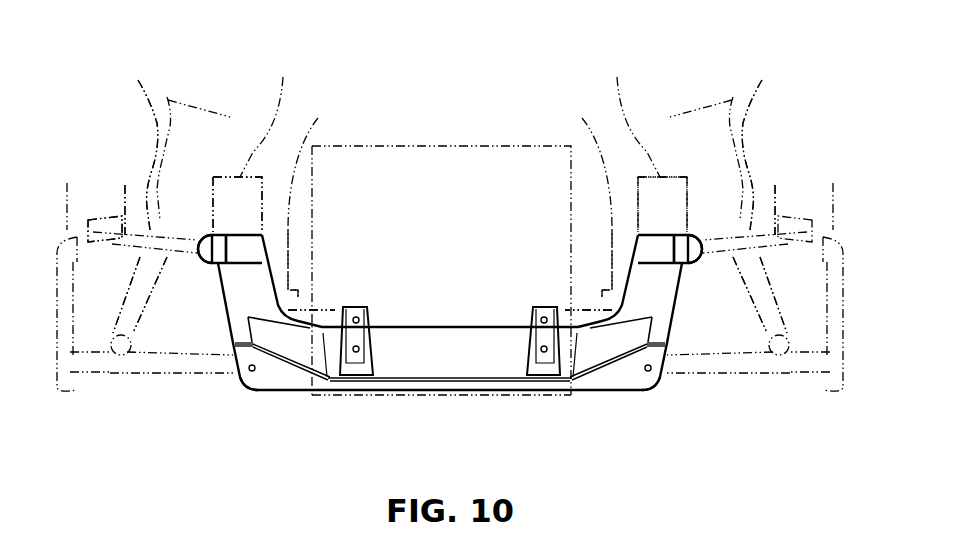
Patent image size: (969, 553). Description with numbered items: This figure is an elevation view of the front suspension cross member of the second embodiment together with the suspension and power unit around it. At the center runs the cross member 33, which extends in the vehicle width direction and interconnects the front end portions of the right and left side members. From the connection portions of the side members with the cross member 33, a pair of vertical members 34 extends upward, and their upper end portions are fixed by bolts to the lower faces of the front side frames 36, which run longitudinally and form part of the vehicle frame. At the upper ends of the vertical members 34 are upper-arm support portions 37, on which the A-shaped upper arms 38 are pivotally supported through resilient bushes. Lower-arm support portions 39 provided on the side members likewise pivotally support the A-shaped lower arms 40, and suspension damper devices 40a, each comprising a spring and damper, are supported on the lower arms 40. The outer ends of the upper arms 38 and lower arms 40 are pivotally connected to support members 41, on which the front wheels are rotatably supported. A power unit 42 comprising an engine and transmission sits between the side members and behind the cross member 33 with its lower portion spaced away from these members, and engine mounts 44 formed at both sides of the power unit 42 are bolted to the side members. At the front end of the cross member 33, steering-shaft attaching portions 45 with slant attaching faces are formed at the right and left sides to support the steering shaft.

The cross member 33 is at (437, 327).
The vertical member 34 is at (230, 313).
The front side frame 36 is at (253, 152).
The upper-arm support portion 37 is at (199, 226).
The upper arm 38 is at (445, 194).
The lower-arm support portion 39 is at (241, 388).
The lower arm 40 is at (118, 368).
The suspension damper device 40a is at (442, 136).
The support member 41 is at (456, 234).
The power unit 42 is at (432, 146).
The engine mount 44 is at (288, 230).
The steering-shaft attaching portion 45 is at (355, 307).